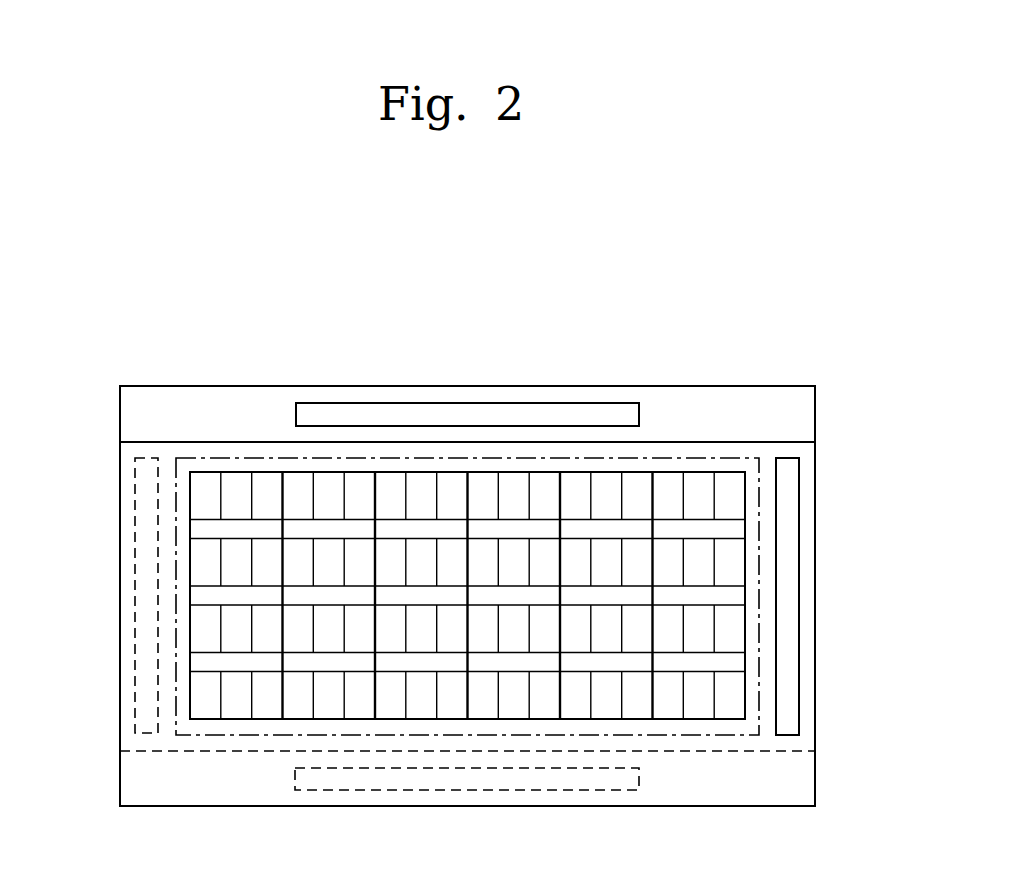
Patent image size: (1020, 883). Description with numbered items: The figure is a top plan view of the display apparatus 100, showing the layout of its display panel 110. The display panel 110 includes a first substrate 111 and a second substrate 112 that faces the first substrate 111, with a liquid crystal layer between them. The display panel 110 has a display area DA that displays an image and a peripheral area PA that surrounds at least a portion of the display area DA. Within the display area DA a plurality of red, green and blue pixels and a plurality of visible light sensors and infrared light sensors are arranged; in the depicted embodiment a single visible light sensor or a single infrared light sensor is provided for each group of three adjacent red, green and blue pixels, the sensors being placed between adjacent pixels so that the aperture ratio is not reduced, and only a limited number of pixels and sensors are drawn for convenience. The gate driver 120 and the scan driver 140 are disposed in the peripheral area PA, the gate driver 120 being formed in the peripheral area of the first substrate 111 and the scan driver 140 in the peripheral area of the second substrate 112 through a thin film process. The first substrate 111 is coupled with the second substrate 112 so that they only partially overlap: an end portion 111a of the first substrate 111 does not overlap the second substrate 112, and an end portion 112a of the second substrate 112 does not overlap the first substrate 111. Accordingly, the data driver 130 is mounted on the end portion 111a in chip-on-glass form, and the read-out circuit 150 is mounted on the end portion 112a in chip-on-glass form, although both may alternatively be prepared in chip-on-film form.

The display apparatus 100 is at (806, 281).
The display panel 110 is at (685, 321).
The first substrate 111 is at (701, 386).
The end portion of the first substrate 111a is at (198, 396).
The second substrate 112 is at (766, 447).
The end portion of the second substrate 112a is at (213, 796).
The gate driver 120 is at (90, 597).
The data driver 130 is at (468, 402).
The scan driver 140 is at (799, 597).
The read-out circuit 150 is at (447, 791).
The display area DA is at (752, 528).
The peripheral area PA is at (808, 657).